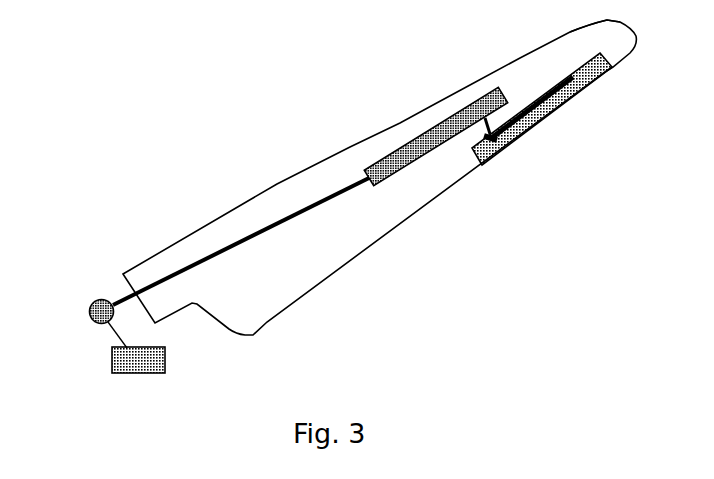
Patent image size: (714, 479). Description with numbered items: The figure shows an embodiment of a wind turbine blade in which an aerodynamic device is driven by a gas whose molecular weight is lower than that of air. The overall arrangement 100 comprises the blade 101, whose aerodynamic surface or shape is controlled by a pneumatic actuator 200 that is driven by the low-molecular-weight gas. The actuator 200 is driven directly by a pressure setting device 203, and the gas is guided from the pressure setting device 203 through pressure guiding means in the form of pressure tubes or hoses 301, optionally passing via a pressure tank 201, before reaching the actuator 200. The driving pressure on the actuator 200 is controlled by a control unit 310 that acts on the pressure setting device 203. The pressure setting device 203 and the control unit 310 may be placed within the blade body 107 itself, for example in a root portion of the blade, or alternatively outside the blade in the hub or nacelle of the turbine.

The structural body 100 is at (278, 180).
The blade body 107 is at (530, 67).
The blade 101 is at (558, 107).
The pneumatic actuator 200 is at (510, 137).
The pressure tank 201 is at (452, 118).
The pressure tubes or hoses 301 is at (220, 250).
The pressure setting device 203 is at (92, 303).
The control unit 310 is at (160, 363).